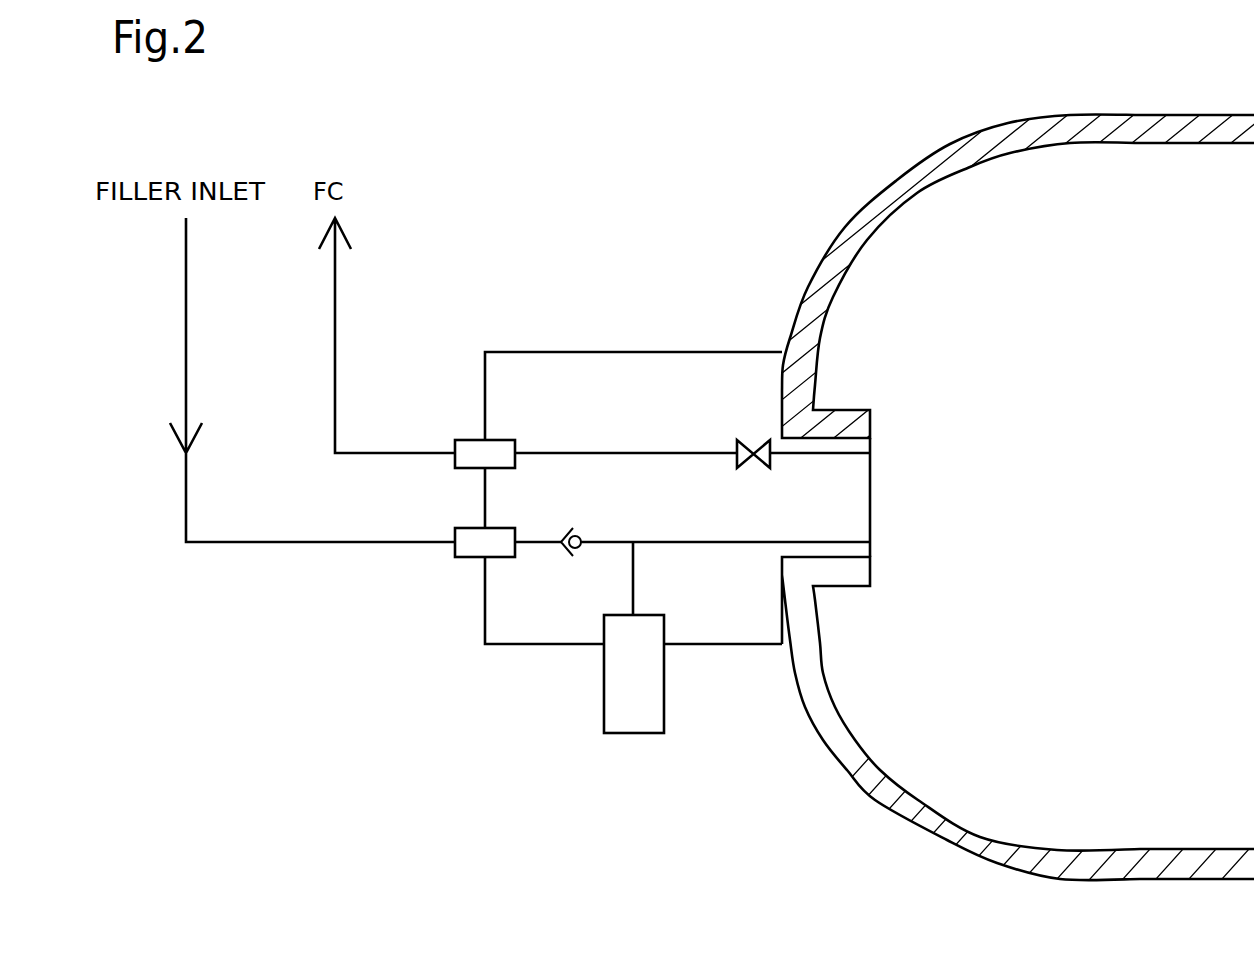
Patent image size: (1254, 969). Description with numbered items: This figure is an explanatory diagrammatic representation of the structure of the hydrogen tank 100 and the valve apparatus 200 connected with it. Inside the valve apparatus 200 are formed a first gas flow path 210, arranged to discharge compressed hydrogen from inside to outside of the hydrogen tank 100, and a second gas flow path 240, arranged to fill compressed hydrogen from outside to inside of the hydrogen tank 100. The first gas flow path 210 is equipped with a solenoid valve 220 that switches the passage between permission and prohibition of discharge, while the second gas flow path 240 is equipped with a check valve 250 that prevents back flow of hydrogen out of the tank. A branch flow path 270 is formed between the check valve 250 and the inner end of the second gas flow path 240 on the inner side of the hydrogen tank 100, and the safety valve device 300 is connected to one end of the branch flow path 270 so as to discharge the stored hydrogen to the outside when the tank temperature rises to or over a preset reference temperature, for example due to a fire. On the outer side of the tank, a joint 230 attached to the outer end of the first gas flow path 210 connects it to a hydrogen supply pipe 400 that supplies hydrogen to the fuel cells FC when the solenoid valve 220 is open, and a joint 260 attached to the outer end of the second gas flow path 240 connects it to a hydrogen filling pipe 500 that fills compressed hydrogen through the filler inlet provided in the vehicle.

The hydrogen tank 100 is at (1100, 114).
The valve apparatus 200 is at (635, 351).
The first gas flow path 210 is at (628, 452).
The solenoid valve 220 is at (735, 440).
The joint 230 is at (462, 440).
The second gas flow path 240 is at (675, 541).
The check valve 250 is at (574, 557).
The joint 260 is at (468, 557).
The branch flow path 270 is at (634, 582).
The safety valve device 300 is at (665, 698).
The hydrogen supply pipe 400 is at (336, 275).
The hydrogen filling pipe 500 is at (187, 275).